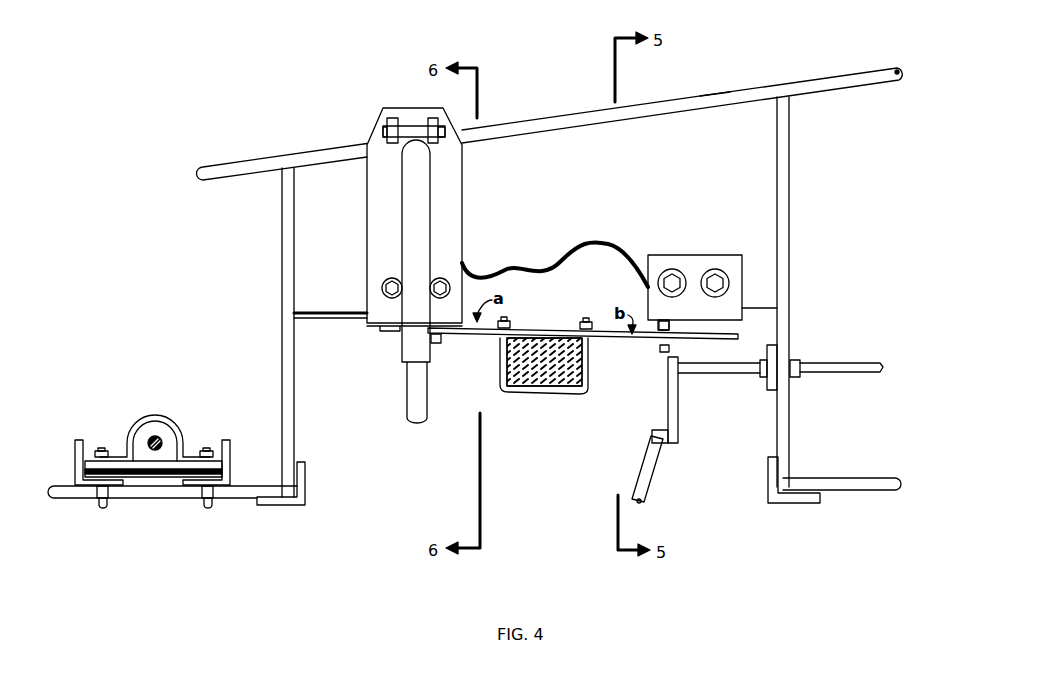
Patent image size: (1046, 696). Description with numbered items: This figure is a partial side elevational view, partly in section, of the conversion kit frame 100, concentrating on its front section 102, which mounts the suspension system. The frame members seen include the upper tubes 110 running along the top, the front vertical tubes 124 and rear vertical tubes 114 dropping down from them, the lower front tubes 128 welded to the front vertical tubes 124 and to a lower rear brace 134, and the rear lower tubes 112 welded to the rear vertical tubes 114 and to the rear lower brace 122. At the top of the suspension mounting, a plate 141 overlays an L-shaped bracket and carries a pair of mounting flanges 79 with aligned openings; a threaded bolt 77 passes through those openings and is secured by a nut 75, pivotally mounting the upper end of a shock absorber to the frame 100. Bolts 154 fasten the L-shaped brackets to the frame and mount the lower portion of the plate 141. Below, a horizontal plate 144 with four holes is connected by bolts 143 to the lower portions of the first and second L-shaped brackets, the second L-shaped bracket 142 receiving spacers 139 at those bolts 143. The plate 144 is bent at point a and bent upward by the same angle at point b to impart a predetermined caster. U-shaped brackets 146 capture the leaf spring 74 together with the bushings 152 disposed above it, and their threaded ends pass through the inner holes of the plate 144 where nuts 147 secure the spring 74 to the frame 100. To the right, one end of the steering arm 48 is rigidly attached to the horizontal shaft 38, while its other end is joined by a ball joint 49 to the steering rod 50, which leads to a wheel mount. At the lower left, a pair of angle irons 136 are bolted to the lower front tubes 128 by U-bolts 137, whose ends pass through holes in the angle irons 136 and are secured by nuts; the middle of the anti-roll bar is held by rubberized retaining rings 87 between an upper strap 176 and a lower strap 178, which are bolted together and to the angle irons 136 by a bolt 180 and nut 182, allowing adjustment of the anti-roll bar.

The kit frame 100 is at (848, 64).
The upper tubes 110 is at (710, 93).
The front section 102 is at (753, 195).
The front vertical tubes 124 is at (282, 264).
The rear vertical tubes 114 is at (793, 315).
The plate 141 is at (373, 116).
The threaded bolt 77 is at (383, 135).
The mounting flanges 79 is at (430, 118).
The nut 75 is at (457, 137).
The bolts 154 is at (384, 279).
The horizontal plate 144 is at (387, 338).
The L-shaped bracket 142 is at (742, 258).
The bolts 143 is at (436, 343).
The nuts 147 is at (503, 318).
The spacers 139 is at (672, 331).
The U-shaped brackets 146 is at (499, 388).
The bushings 152 is at (587, 373).
The leaf spring 74 is at (550, 376).
The steering arm 48 is at (673, 410).
The horizontal shaft 38 is at (817, 372).
The ball joint 49 is at (670, 447).
The steering rod 50 is at (640, 467).
The rear lower brace 122 is at (790, 503).
The rear lower tubes 112 is at (838, 477).
The lower rear brace 134 is at (308, 470).
The lower front tubes 128 is at (147, 498).
The angle irons 136 is at (79, 440).
The lower strap 178 is at (133, 474).
The upper strap 176 is at (162, 418).
The rubberized retaining rings 87 is at (155, 436).
The bolt 180 is at (100, 450).
The nut 182 is at (98, 499).
The U-bolts 137 is at (103, 508).